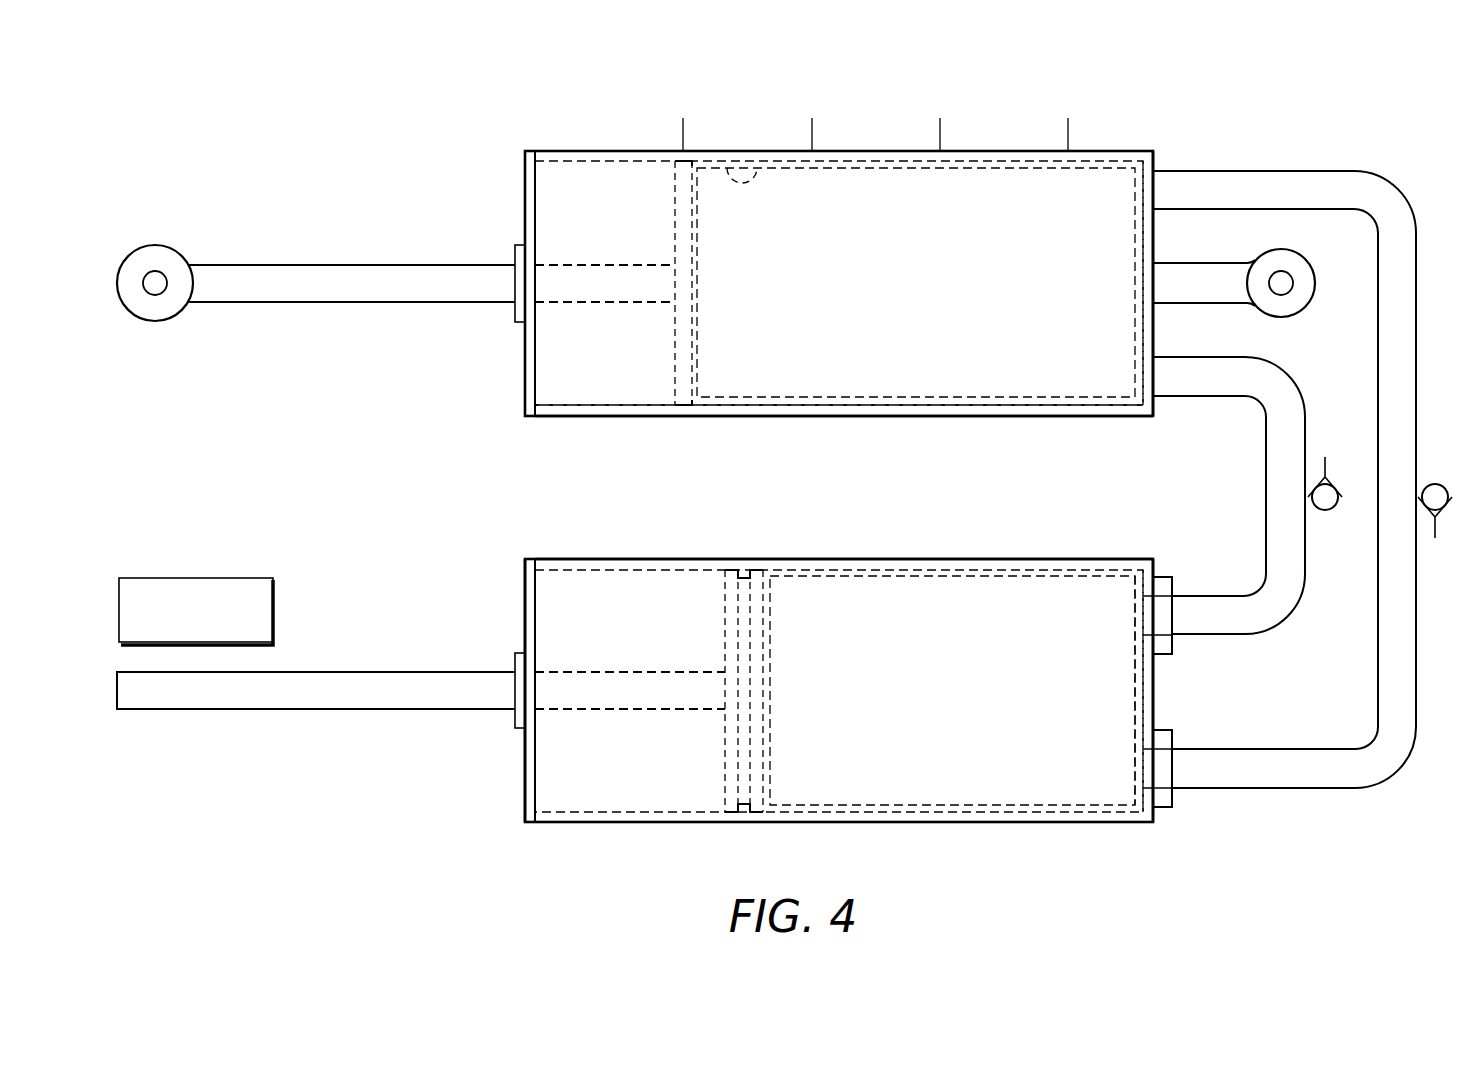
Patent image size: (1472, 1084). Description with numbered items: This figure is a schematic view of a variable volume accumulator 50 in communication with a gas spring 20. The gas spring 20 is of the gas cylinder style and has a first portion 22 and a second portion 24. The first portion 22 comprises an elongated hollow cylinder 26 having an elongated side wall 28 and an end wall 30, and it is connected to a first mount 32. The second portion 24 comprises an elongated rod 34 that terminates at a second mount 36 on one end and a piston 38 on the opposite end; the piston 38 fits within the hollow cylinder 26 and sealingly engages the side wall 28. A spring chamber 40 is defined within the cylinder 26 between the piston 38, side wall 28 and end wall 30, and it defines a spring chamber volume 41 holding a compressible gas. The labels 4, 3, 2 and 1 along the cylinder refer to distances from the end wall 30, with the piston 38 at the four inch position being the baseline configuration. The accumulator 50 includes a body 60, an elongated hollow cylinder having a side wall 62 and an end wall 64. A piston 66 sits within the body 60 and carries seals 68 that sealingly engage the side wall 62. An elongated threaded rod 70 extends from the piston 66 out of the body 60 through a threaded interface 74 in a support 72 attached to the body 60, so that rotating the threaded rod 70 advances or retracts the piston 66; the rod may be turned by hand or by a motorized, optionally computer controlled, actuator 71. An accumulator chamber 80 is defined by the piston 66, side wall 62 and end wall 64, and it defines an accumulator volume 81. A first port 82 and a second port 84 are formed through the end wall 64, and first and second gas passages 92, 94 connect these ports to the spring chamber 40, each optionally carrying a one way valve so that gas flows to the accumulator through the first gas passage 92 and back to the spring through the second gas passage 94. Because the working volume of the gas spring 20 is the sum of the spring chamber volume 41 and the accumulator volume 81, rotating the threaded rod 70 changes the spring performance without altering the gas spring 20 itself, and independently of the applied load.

The distance label 1 is at (1068, 119).
The distance label 2 is at (940, 119).
The distance label 3 is at (812, 119).
The distance label 4 is at (683, 119).
The gas spring 20 is at (328, 98).
The first portion 22 is at (1162, 138).
The second portion 24 is at (274, 256).
The hollow cylinder 26 is at (1012, 422).
The side wall 28 is at (803, 416).
The end wall 30 is at (1155, 327).
The first mount 32 is at (1262, 250).
The rod 34 is at (278, 304).
The second mount 36 is at (148, 245).
The piston 38 is at (674, 183).
The spring chamber 40 is at (907, 190).
The spring chamber volume 41 is at (757, 172).
The accumulator 50 is at (576, 506).
The body 60 is at (936, 556).
The side wall 62 is at (900, 558).
The end wall 64 is at (1157, 695).
The piston 66 is at (745, 808).
The seals 68 is at (755, 560).
The threaded rod 70 is at (385, 672).
The actuator 71 is at (200, 578).
The support 72 is at (530, 780).
The threaded interface 74 is at (520, 663).
The accumulator chamber 80 is at (935, 770).
The accumulator volume 81 is at (1052, 812).
The first port 82 is at (1162, 576).
The second port 84 is at (1162, 797).
The first gas passage 92 is at (1283, 478).
The second gas passage 94 is at (1332, 770).